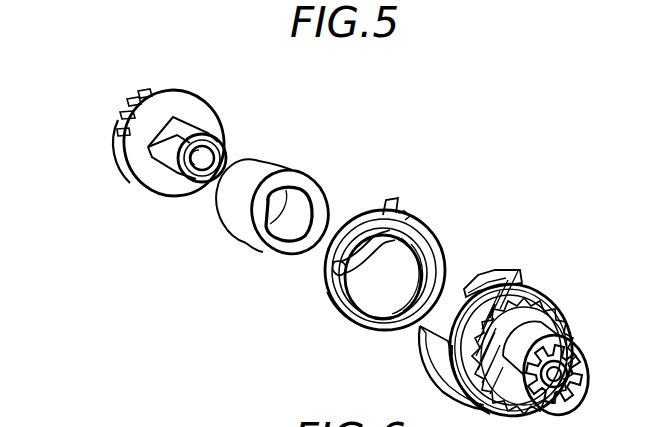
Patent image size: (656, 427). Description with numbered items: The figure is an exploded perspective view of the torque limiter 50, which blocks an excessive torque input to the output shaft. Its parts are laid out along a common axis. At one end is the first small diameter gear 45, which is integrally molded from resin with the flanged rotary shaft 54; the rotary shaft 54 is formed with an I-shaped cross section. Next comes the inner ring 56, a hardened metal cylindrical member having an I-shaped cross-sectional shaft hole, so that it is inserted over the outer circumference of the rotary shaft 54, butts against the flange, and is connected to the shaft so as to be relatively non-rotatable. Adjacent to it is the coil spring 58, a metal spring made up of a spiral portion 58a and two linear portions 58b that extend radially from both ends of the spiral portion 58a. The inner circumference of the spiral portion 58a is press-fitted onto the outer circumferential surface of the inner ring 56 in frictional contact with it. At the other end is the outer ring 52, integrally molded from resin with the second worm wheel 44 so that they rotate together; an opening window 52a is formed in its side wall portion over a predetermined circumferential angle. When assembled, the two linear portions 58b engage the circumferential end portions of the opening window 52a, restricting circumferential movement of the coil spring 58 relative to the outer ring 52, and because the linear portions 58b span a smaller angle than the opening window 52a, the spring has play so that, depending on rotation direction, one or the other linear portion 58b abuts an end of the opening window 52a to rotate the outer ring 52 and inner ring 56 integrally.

The torque limiter 50 is at (494, 130).
The first small diameter gear 45 is at (130, 108).
The flanged rotary shaft 54 is at (183, 113).
The inner ring 56 is at (277, 163).
The coil spring 58 is at (408, 197).
The spiral portion 58a is at (406, 221).
The linear portions 58b is at (388, 200).
The outer ring 52 is at (524, 268).
The opening window 52a is at (420, 328).
The second worm wheel 44 is at (518, 312).